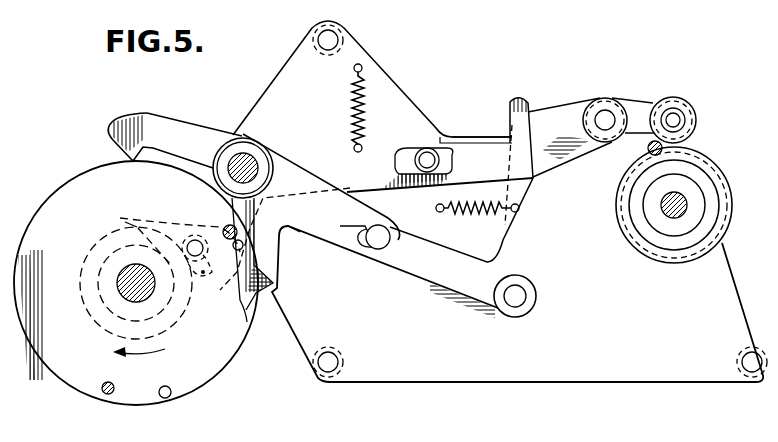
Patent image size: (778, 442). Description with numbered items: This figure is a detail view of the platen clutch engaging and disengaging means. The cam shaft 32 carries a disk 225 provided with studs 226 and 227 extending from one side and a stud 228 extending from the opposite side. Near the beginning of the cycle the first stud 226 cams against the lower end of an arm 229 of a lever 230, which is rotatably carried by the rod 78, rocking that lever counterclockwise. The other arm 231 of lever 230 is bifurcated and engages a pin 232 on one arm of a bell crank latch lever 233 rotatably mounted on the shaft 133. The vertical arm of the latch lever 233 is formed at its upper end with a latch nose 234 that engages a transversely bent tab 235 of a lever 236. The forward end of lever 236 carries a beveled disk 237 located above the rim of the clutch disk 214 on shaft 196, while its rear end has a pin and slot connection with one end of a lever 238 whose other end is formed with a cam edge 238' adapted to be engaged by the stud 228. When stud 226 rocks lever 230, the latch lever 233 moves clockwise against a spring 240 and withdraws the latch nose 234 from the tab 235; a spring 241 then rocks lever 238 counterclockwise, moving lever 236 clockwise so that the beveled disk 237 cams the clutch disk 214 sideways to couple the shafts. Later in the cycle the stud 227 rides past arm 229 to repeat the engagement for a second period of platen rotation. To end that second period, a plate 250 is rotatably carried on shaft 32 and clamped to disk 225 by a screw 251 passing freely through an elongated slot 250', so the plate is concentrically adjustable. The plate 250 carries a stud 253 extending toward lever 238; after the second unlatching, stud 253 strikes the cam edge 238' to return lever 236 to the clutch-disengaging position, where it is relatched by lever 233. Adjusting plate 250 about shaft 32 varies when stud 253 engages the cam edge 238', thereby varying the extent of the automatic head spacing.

The cam shaft 32 is at (148, 292).
The rod 78 is at (246, 154).
The shaft 133 is at (519, 300).
The shaft 196 is at (675, 217).
The clutch disk 214 is at (631, 230).
The disk 225 is at (228, 343).
The stud 226 is at (246, 270).
The stud 227 is at (104, 391).
The stud 228 is at (171, 394).
The arm 229 is at (271, 293).
The lever 230 is at (268, 217).
The arm 231 is at (356, 246).
The pin 232 is at (383, 238).
The bell crank latch lever 233 is at (473, 284).
The latch nose 234 is at (510, 110).
The tab 235 is at (510, 130).
The lever 236 is at (557, 120).
The beveled disk 237 is at (673, 103).
The lever 238 is at (310, 130).
The cam edge 238' is at (91, 133).
The spring 240 is at (480, 203).
The spring 241 is at (367, 93).
The plate 250 is at (160, 263).
The elongated slot 250' is at (111, 216).
The screw 251 is at (196, 244).
The stud 253 is at (263, 200).